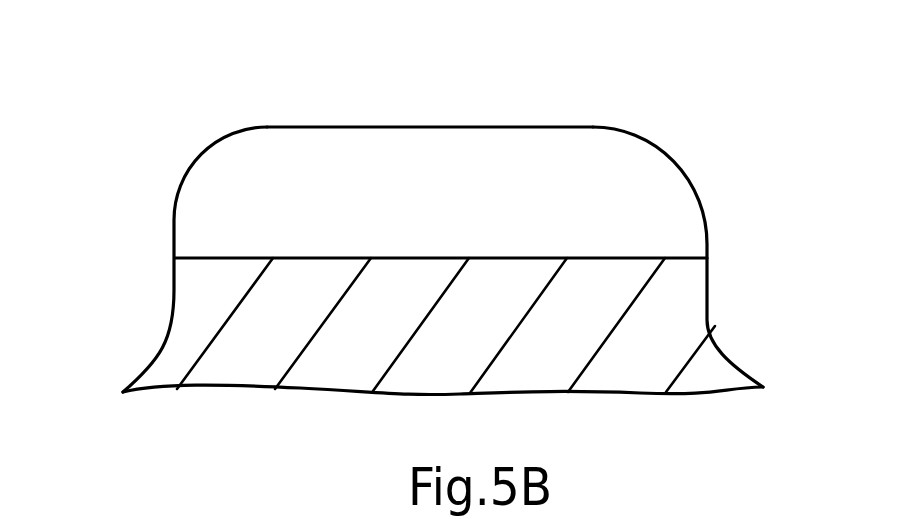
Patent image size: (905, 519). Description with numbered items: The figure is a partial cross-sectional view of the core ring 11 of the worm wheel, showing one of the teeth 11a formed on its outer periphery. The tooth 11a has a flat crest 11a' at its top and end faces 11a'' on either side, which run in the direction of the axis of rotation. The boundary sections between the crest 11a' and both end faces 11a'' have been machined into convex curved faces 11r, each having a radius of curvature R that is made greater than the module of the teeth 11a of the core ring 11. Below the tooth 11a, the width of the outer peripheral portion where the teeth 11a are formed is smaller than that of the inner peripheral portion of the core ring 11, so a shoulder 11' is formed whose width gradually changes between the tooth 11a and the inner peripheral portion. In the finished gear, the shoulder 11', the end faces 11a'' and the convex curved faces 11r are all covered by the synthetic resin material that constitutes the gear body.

The core ring 11 is at (443, 306).
The teeth 11a is at (430, 97).
The crest 11a' is at (540, 74).
The end faces 11a'' is at (428, 262).
The convex curved face 11r is at (202, 167).
The shoulder 11' is at (436, 341).
The radius of curvature R is at (209, 165).